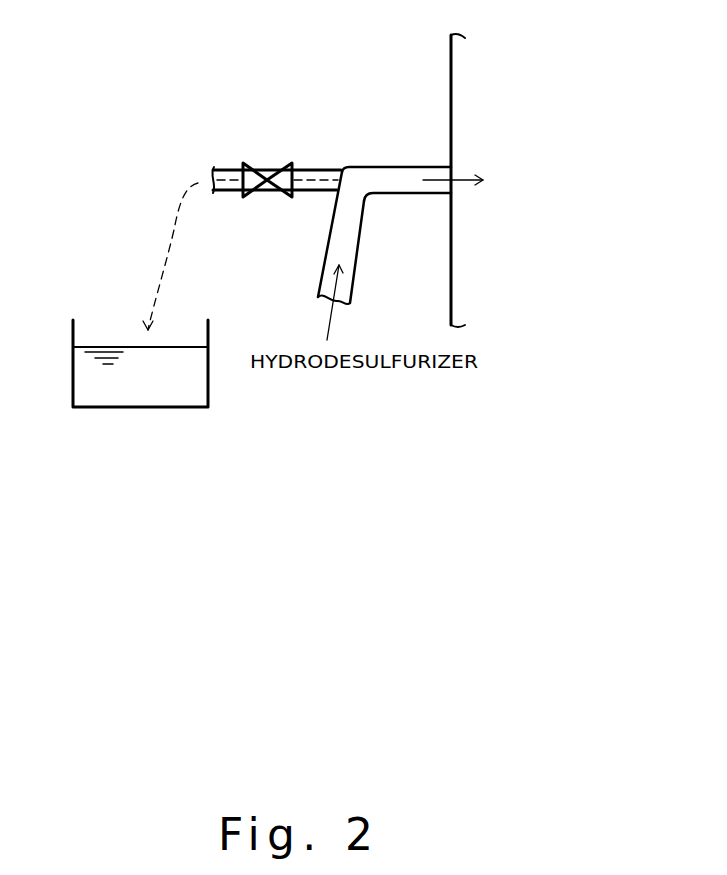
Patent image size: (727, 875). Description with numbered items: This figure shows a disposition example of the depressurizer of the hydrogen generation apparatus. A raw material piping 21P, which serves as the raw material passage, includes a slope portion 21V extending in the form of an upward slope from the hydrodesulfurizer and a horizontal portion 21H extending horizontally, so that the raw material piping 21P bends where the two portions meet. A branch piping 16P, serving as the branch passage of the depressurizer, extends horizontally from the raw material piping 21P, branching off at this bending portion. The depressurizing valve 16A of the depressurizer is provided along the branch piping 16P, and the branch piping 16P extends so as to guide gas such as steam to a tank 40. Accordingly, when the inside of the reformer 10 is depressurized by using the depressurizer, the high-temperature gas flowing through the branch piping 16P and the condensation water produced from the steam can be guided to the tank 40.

The reformer 10 is at (542, 156).
The depressurizing valve 16A is at (257, 165).
The branch piping 16P is at (308, 165).
The horizontal portion 21H is at (390, 166).
The raw material piping 21P is at (336, 217).
The slope portion 21V is at (313, 237).
The tank 40 is at (103, 407).